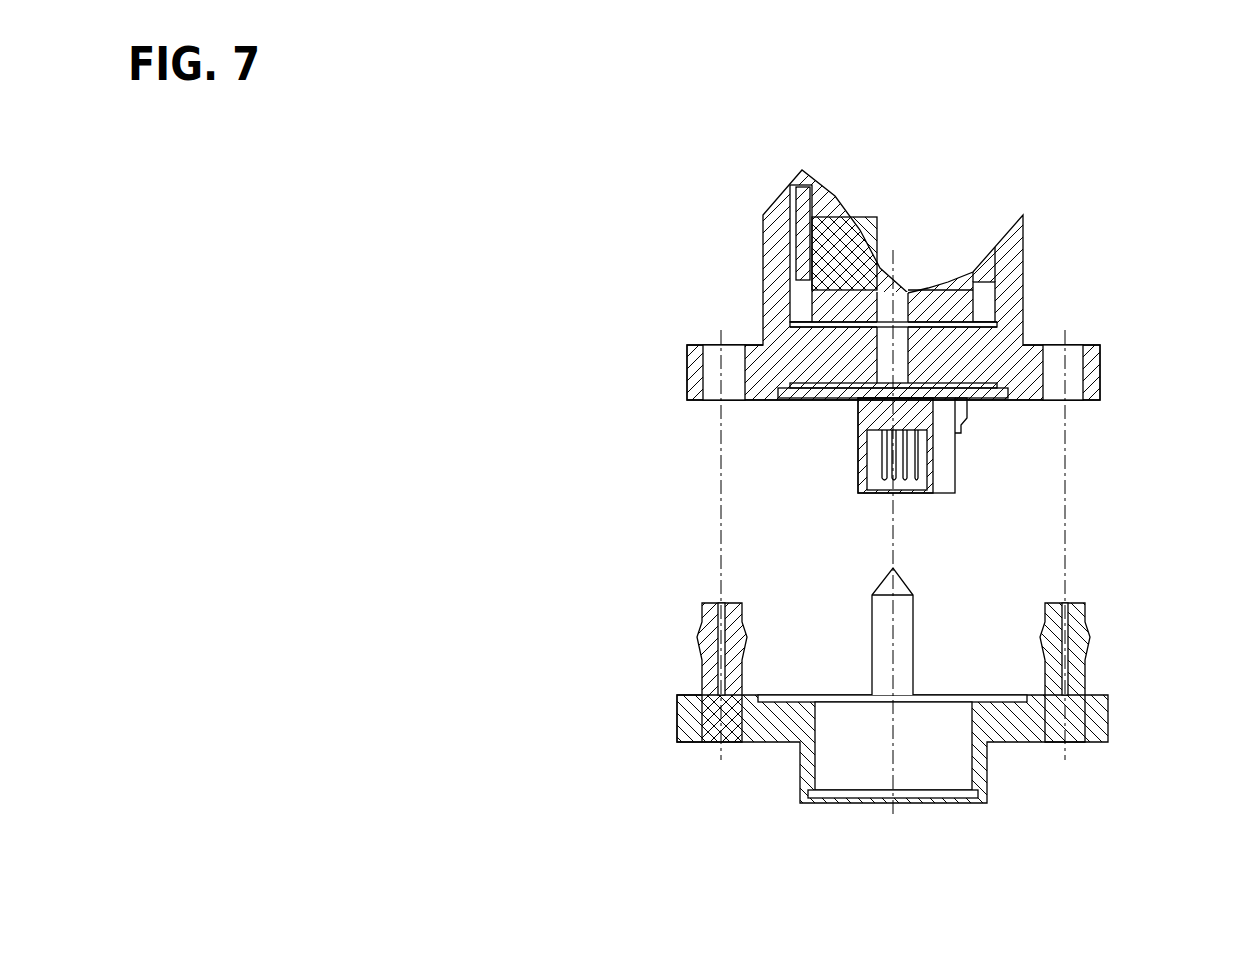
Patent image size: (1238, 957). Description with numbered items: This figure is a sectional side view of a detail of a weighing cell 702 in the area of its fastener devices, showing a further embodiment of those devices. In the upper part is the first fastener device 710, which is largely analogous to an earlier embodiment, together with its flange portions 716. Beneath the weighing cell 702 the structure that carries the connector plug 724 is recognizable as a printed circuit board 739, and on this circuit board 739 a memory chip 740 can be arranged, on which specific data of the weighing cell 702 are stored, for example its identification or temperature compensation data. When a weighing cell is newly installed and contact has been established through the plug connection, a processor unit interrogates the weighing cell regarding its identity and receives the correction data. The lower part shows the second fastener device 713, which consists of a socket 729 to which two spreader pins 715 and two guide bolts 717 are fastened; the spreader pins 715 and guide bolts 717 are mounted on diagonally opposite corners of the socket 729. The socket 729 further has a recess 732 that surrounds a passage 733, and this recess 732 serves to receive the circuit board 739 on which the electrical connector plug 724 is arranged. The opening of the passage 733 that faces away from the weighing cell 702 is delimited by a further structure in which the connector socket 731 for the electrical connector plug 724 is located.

The weighing cell 702 is at (896, 285).
The first fastener device 710 is at (1107, 392).
The flange apertures 716 is at (713, 357).
The printed circuit board 739 is at (790, 388).
The memory chip 740 is at (810, 400).
The connector plug 724 is at (857, 453).
The second fastener device 713 is at (894, 679).
The recess 732 is at (988, 698).
The passage 733 is at (858, 747).
The connector socket 731 is at (930, 797).
The socket 729 is at (695, 712).
The spreader pins 715 is at (1087, 623).
The guide bolts 717 is at (892, 623).